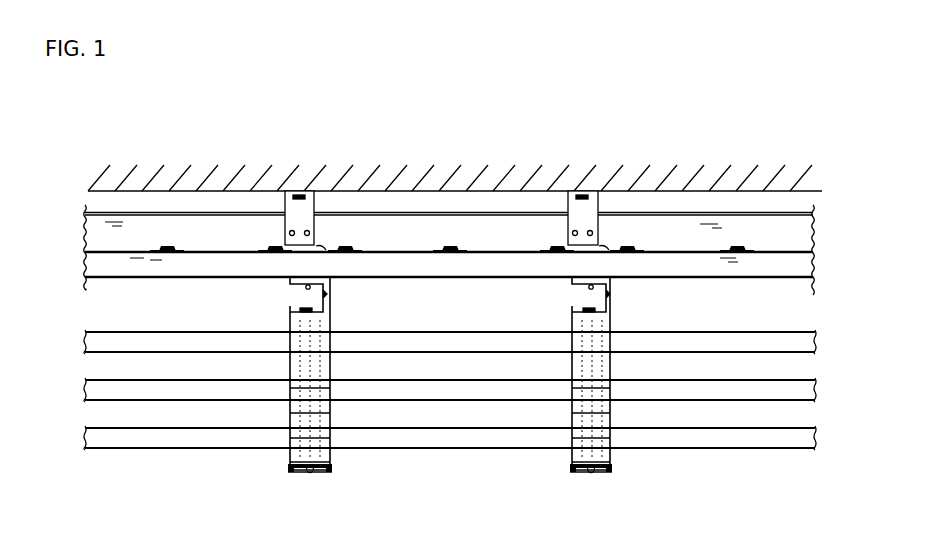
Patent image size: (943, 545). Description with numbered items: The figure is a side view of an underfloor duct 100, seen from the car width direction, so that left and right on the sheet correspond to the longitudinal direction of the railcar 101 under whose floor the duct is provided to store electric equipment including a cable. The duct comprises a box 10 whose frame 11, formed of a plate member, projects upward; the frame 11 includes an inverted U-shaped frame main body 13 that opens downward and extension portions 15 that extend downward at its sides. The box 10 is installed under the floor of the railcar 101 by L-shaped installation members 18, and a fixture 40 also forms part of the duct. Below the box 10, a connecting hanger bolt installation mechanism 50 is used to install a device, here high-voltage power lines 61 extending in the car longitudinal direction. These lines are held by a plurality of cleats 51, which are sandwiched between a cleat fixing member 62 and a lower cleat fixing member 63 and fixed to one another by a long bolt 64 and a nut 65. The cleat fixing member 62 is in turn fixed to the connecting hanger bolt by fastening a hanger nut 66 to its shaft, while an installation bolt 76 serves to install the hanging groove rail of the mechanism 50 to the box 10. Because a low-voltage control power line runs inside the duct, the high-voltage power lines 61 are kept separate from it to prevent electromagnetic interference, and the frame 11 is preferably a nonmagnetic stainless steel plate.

The railcar 101 is at (468, 152).
The underfloor duct 100 is at (716, 288).
The box 10 is at (448, 281).
The frame 11 is at (396, 280).
The frame main body 13 is at (498, 244).
The extension portion 15 is at (509, 278).
The installation member 18 is at (314, 206).
The fixture 40 is at (448, 245).
The connecting hanger bolt installation mechanism 50 is at (304, 286).
The cleat 51 is at (322, 358).
The high-voltage power line 61 is at (448, 342).
The cleat fixing member 62 is at (293, 312).
The lower cleat fixing member 63 is at (332, 470).
The long bolt 64 is at (332, 413).
The nut 65 is at (302, 474).
The hanger nut 66 is at (330, 294).
The installation bolt 76 is at (318, 244).